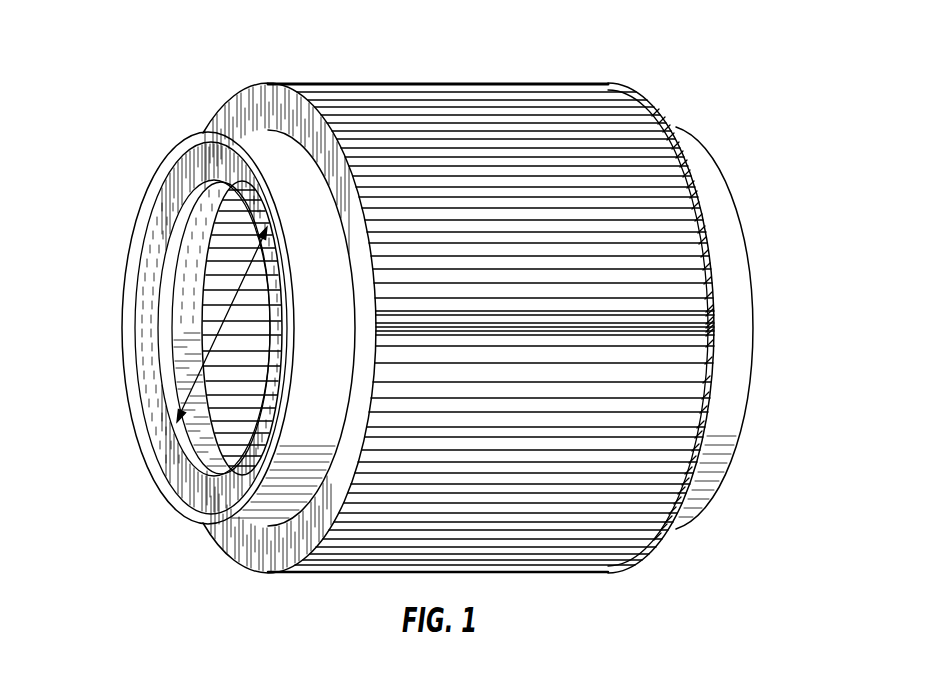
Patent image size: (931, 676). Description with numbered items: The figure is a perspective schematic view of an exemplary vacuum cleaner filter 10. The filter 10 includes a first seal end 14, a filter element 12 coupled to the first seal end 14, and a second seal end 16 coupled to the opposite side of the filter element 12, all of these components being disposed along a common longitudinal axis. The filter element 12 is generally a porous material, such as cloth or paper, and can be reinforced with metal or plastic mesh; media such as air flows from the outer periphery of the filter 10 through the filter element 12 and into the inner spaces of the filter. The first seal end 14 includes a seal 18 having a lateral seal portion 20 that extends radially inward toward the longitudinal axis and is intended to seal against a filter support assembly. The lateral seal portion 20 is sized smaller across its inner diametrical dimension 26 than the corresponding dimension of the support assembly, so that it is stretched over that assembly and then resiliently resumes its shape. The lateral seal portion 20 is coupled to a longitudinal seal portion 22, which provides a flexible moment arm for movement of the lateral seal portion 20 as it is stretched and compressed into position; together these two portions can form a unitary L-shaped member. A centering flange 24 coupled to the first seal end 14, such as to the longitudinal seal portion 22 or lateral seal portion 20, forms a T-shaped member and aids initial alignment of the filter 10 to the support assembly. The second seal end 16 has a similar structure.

The filter 10 is at (676, 46).
The filter element 12 is at (455, 95).
The first seal end 14 is at (258, 100).
The second seal end 16 is at (697, 160).
The seal 18 is at (194, 178).
The lateral seal portion 20 is at (172, 258).
The longitudinal seal portion 22 is at (203, 237).
The centering flange 24 is at (132, 335).
The inner diametrical dimension 26 is at (185, 398).